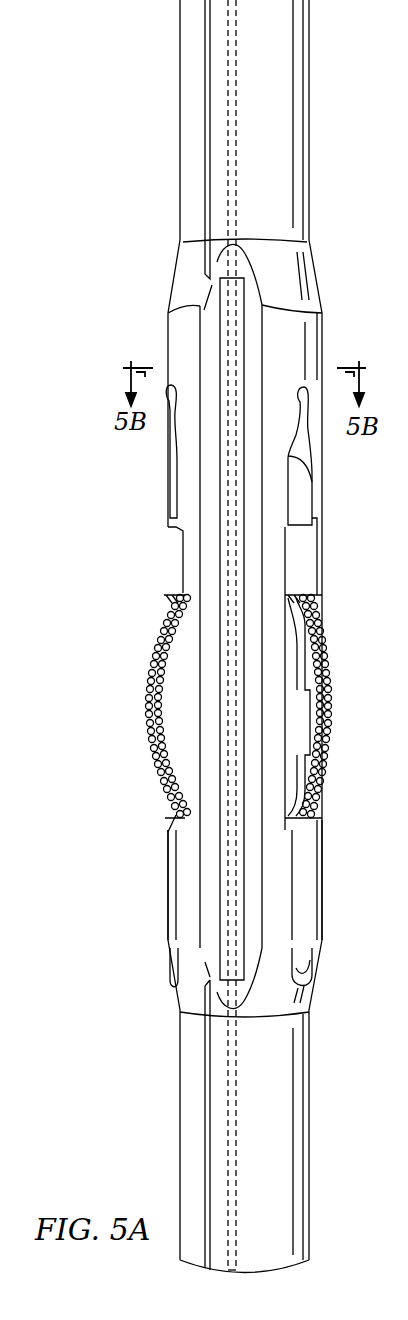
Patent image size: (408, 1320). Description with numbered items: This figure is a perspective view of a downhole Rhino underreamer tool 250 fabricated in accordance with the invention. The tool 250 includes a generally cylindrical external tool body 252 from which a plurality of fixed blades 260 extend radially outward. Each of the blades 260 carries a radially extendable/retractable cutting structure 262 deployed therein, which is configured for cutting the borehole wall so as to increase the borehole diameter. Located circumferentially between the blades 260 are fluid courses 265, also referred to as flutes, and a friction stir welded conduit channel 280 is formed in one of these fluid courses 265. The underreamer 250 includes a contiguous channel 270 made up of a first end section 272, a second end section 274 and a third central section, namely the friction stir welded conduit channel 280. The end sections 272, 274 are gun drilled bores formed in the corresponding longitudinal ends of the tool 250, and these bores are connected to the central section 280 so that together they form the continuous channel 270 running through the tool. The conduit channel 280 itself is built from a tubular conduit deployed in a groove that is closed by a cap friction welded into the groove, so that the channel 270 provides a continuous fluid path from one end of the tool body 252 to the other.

The underreamer tool 250 is at (156, 226).
The external tool body 252 is at (180, 38).
The fixed blades 260 is at (185, 873).
The cutting structure 262 is at (148, 655).
The fluid courses 265 is at (208, 337).
The contiguous channel 270 is at (227, 556).
The first end section 272 is at (207, 130).
The second end section 274 is at (208, 1122).
The friction stir welded conduit channel 280 is at (218, 512).